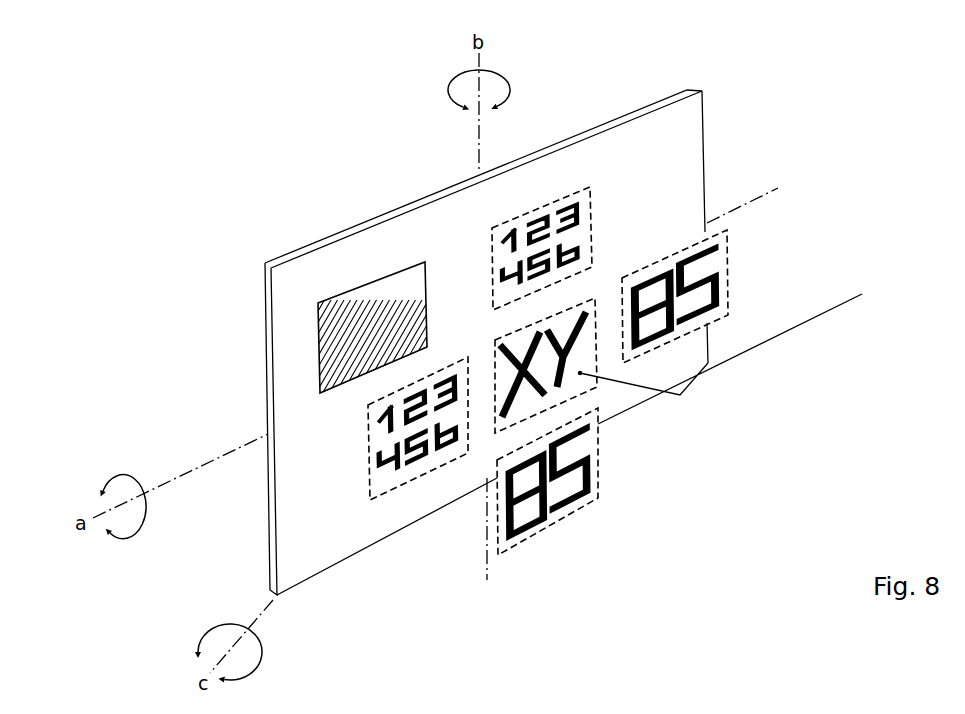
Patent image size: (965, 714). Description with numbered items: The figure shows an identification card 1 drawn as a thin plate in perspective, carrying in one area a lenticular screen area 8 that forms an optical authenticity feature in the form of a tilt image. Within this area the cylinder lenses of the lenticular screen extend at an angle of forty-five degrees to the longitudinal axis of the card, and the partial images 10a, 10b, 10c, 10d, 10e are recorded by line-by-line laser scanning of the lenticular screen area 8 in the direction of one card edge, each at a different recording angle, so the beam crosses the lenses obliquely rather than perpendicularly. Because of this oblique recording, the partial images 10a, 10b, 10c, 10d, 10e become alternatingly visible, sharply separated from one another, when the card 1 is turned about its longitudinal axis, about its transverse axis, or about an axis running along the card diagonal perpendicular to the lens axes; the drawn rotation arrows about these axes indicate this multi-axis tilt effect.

The identification card 1 is at (667, 127).
The lenticular screen area 8 is at (352, 333).
The partial image 10a is at (915, 294).
The partial image 10b is at (580, 228).
The partial image 10c is at (598, 498).
The partial image 10d is at (370, 500).
The partial image 10e is at (723, 268).